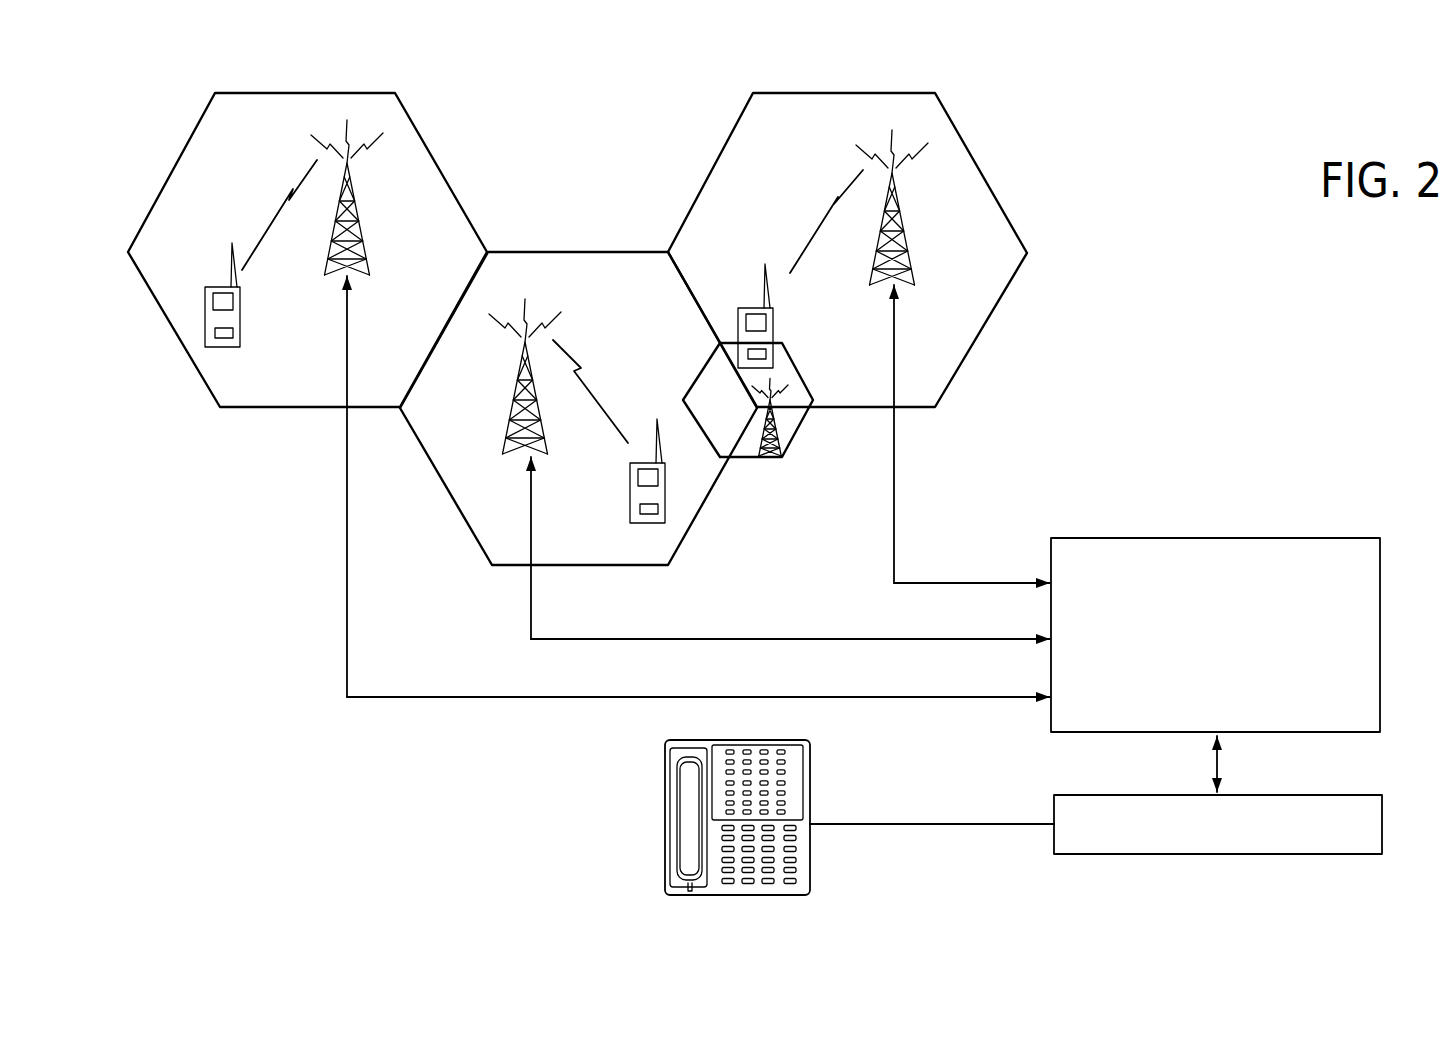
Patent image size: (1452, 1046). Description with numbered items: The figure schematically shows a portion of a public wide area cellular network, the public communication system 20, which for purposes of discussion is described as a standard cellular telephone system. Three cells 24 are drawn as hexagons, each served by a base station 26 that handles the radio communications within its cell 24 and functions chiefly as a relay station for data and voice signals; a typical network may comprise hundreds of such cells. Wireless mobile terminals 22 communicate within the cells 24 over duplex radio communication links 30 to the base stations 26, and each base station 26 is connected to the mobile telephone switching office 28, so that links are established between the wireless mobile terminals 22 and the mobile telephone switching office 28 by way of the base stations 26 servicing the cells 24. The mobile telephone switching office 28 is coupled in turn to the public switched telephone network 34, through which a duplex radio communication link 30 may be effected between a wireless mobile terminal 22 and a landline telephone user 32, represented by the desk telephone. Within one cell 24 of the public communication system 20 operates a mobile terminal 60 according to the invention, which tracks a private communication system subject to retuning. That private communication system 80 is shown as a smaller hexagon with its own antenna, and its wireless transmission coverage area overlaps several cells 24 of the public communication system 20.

The public communication system 20 is at (1085, 207).
The wireless mobile terminal 22 is at (208, 287).
The cell 24 is at (353, 95).
The base station 26 is at (367, 210).
The mobile telephone switching office 28 is at (1335, 537).
The duplex radio communication link 30 is at (263, 212).
The landline telephone user 32 is at (665, 790).
The public switched telephone network 34 is at (1309, 854).
The mobile terminal 60 is at (742, 307).
The private communication system 80 is at (763, 458).